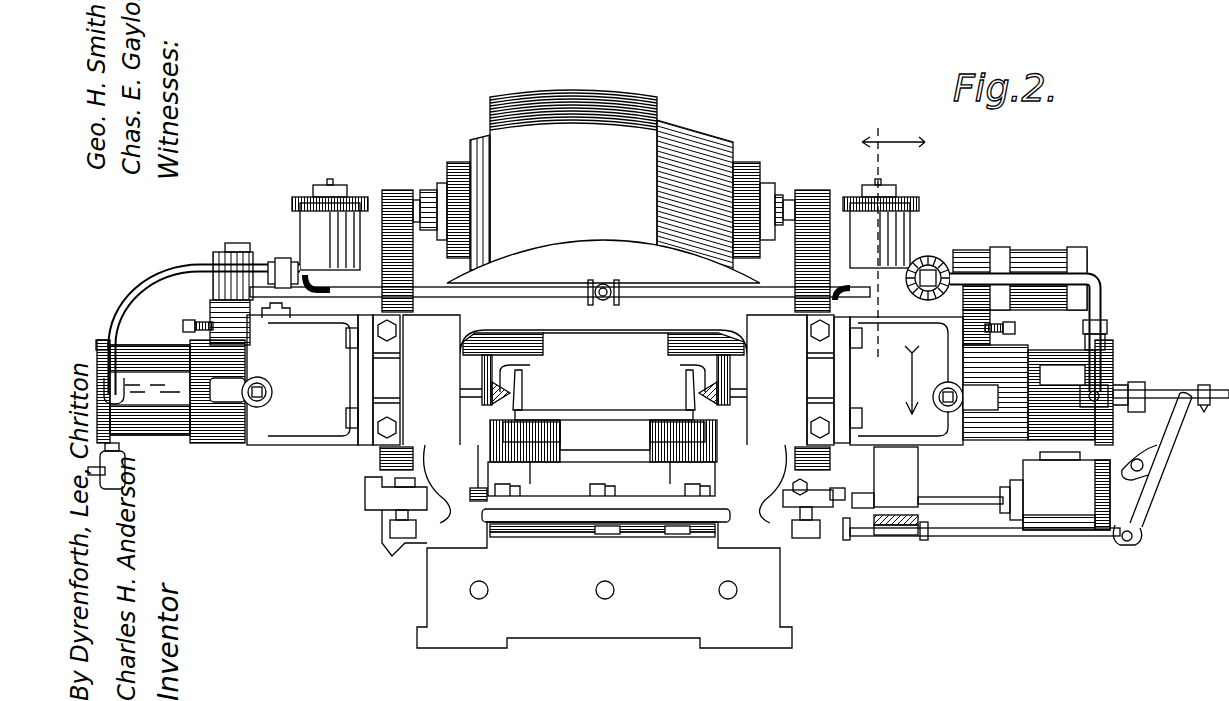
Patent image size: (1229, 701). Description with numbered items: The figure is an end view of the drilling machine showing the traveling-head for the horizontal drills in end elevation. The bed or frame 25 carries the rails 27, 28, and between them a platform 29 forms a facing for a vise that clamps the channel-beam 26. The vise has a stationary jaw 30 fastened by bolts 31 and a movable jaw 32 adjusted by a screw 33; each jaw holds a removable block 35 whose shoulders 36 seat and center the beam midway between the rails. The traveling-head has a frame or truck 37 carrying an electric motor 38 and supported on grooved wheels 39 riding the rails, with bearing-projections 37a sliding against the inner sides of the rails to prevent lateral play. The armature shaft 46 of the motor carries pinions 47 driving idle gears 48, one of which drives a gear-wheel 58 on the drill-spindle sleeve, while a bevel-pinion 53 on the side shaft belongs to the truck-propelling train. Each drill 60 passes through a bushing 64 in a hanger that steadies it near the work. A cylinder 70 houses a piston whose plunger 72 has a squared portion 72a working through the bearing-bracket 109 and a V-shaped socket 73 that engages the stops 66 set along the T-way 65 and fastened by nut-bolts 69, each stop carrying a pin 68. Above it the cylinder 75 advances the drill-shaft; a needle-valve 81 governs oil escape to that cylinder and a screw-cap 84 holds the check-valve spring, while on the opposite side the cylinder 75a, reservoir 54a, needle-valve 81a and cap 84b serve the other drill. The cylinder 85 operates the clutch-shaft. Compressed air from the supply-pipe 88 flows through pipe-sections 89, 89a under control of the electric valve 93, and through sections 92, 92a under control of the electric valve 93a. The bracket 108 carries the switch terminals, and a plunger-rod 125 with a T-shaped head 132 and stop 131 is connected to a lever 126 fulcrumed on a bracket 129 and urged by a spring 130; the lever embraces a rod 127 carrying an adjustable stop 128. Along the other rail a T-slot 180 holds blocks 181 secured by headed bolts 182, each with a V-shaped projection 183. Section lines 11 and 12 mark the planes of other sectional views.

The section line 11 is at (893, 233).
The section line 12 is at (935, 398).
The bed or frame 25 is at (604, 585).
The channel-beam 26 is at (604, 415).
The rail 27 is at (752, 488).
The rail 28 is at (448, 475).
The platform 29 is at (576, 540).
The stationary jaw 30 is at (715, 426).
The bolts 31 is at (606, 492).
The movable jaw 32 is at (490, 427).
The screw 33 is at (480, 518).
The removable block 35 is at (543, 426).
The shoulders 36 is at (517, 416).
The frame or truck 37 is at (581, 243).
The bearing-projections 37a is at (760, 498).
The electric motor 38 is at (574, 97).
The grooved wheels 39 is at (403, 430).
The armature shaft 46 is at (790, 203).
The pinions 47 is at (395, 192).
The idle gear 48 is at (405, 268).
The bevel-pinion 53 is at (930, 258).
The oil-chamber or reservoir 54a is at (310, 380).
The gear-wheel 58 is at (378, 457).
The drill 60 is at (482, 392).
The bushing 64 is at (502, 380).
The T-way 65 is at (795, 540).
The stop 66 is at (848, 486).
The lug or pin 68 is at (836, 540).
The nut-bolts 69 is at (797, 492).
The cylinder 70 is at (1066, 491).
The stem or plunger 72 is at (975, 490).
The squared portion of plunger stem 72a is at (922, 506).
The V-shaped socket 73 is at (862, 503).
The cylinder 75 is at (1038, 392).
The cylinder 75a is at (158, 436).
The adjustable needle-valve 81 is at (1018, 328).
The needle-valve 81a is at (183, 326).
The screw-cap 84 is at (947, 388).
The cap 84b is at (282, 368).
The cylinder 85 is at (1040, 253).
The compressed-air supply-pipe 88 is at (604, 285).
The pipe section 89 is at (690, 292).
The pipe section 89a is at (976, 275).
The pipe section 92 is at (548, 290).
The pipe section 92a is at (176, 282).
The electric valve 93 is at (903, 208).
The electric valve 93a is at (308, 235).
The bracket 108 is at (920, 520).
The bearing-bracket 109 is at (898, 491).
The plunger-rod 125 is at (1060, 538).
The lever 126 is at (1154, 447).
The rod 127 is at (1170, 390).
The adjustable stop 128 is at (1204, 405).
The bracket 129 is at (1144, 466).
The spring 130 is at (1133, 536).
The stop 131 is at (922, 540).
The T-shaped head 132 is at (850, 540).
The T-slot 180 is at (407, 550).
The blocks or stops 181 is at (370, 505).
The headed bolts 182 is at (392, 532).
The V-shaped projection 183 is at (368, 480).